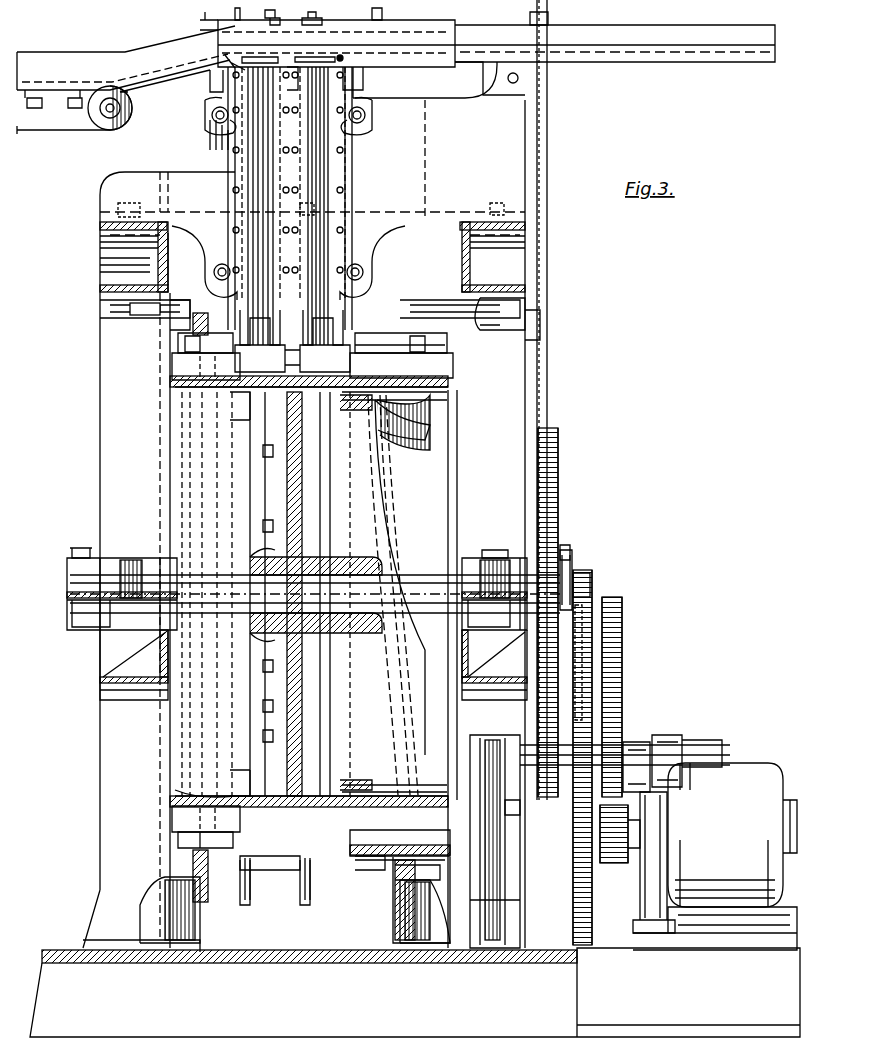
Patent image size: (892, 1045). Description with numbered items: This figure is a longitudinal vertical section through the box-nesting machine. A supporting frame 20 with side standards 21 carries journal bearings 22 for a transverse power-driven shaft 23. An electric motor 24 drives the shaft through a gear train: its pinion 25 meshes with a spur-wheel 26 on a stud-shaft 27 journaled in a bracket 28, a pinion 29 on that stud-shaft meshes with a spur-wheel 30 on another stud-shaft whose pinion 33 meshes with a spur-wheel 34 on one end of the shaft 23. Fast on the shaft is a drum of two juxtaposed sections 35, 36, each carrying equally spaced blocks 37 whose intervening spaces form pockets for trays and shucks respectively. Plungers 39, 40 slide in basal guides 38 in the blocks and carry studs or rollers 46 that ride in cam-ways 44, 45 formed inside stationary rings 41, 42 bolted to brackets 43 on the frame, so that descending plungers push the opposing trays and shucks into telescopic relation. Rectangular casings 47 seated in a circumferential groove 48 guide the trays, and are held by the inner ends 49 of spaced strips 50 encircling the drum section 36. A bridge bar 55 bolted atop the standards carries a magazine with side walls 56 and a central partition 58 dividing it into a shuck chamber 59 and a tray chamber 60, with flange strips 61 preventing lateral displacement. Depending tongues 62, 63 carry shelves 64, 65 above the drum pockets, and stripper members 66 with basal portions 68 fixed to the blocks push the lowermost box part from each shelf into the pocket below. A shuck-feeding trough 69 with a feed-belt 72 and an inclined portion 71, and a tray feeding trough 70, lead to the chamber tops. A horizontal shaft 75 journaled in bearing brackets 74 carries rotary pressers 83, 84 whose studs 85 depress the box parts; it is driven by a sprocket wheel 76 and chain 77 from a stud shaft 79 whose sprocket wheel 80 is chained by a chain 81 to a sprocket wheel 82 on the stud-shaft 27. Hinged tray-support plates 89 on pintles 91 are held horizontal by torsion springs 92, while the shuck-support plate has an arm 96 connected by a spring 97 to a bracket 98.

The supporting frame 20 is at (415, 992).
The side standards 21 is at (115, 232).
The journal bearings 22 is at (100, 628).
The power-driven shaft 23 is at (62, 600).
The electric motor 24 is at (715, 856).
The pinion 25 is at (600, 845).
The spur-wheel 26 is at (625, 618).
The stud-shaft 27 is at (520, 738).
The bracket 28 is at (690, 735).
The pinion 29 is at (580, 785).
The spur-wheel 30 is at (575, 930).
The pinion 33 is at (600, 695).
The spur-wheel 34 is at (562, 465).
The drum section 35 is at (430, 480).
The drum section 36 is at (235, 383).
The blocks 37 is at (340, 340).
The basal guides 38 is at (445, 390).
The plungers 39 is at (445, 365).
The plungers 40 is at (175, 365).
The ring 41 is at (505, 327).
The ring 42 is at (200, 285).
The brackets 43 is at (125, 317).
The cam-way 44 is at (425, 340).
The cam-way 45 is at (205, 335).
The studs or rollers 46 is at (178, 343).
The casing 47 is at (318, 430).
The circumferential groove 48 is at (270, 415).
The inner ends 49 is at (212, 795).
The strips 50 is at (178, 383).
The bridge bar 55 is at (100, 205).
The side walls 56 is at (232, 188).
The central partition 58 is at (300, 202).
The shuck chamber 59 is at (260, 150).
The tray chamber 60 is at (320, 160).
The flange strips 61 is at (235, 243).
The depending tongue 62 is at (255, 335).
The depending tongue 63 is at (340, 320).
The shelf 64 is at (260, 358).
The shelf 65 is at (317, 358).
The stripper members 66 is at (260, 870).
The basal portions 68 is at (255, 875).
The shuck-feeding trough 69 is at (160, 50).
The tray feeding trough 70 is at (715, 42).
The inclined portion 71 is at (165, 72).
The feed-belt 72 is at (52, 133).
The bearing brackets 74 is at (235, 15).
The horizontal shaft 75 is at (185, 21).
The sprocket wheel 76 is at (550, 18).
The chain 77 is at (548, 135).
The stud shaft 79 is at (595, 590).
The sprocket wheel 80 is at (575, 545).
The chain 81 is at (585, 655).
The sprocket wheel 82 is at (514, 812).
The rotary presser 83 is at (250, 30).
The rotary presser 84 is at (316, 12).
The studs 85 is at (232, 68).
The plates 89 is at (355, 85).
The pintles 91 is at (295, 72).
The torsion springs 92 is at (345, 58).
The arm 96 is at (245, 65).
The spring 97 is at (225, 65).
The bracket 98 is at (225, 100).